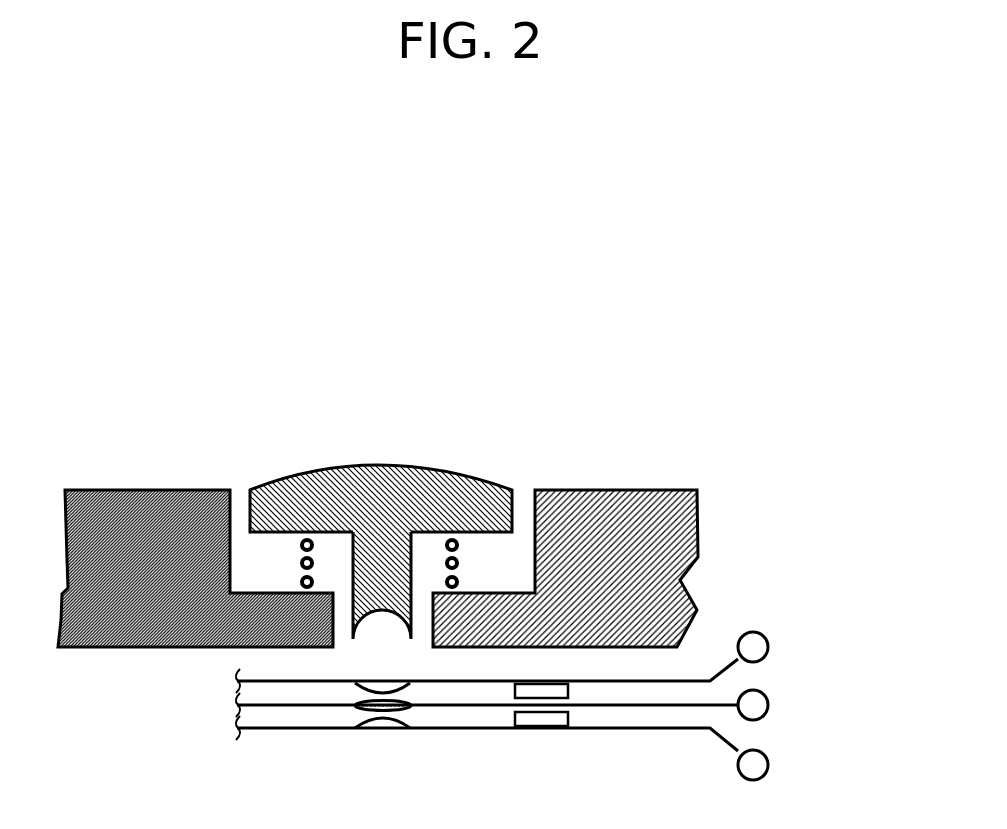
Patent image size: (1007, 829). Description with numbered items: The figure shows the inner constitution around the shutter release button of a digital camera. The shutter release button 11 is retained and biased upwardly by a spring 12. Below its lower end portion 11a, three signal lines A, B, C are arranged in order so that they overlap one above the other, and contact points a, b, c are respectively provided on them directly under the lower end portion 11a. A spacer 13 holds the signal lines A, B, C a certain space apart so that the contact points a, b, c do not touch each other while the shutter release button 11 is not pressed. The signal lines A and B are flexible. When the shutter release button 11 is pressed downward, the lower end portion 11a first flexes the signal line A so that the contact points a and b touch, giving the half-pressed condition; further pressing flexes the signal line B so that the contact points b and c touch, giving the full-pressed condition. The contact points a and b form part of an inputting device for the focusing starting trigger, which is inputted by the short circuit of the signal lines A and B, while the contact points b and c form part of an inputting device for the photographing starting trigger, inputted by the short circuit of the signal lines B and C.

The shutter release button 11 is at (338, 577).
The lower end portion 11a is at (352, 661).
The spring 12 is at (462, 562).
The spacer 13 is at (572, 687).
The signal line A is at (768, 637).
The signal line B is at (768, 693).
The signal line C is at (768, 753).
The contact point a is at (362, 686).
The contact point b is at (355, 708).
The contact point c is at (410, 725).